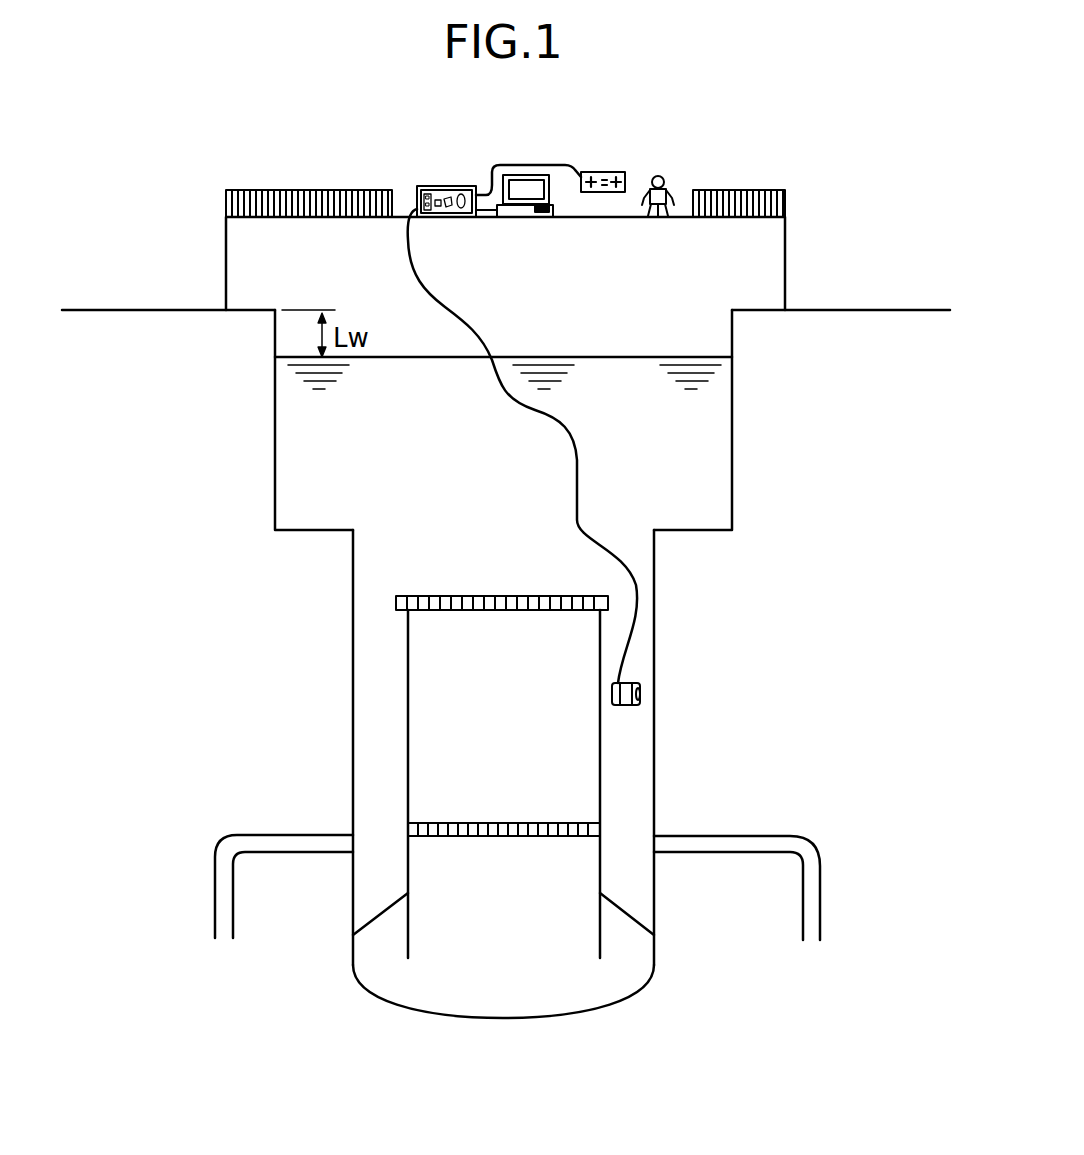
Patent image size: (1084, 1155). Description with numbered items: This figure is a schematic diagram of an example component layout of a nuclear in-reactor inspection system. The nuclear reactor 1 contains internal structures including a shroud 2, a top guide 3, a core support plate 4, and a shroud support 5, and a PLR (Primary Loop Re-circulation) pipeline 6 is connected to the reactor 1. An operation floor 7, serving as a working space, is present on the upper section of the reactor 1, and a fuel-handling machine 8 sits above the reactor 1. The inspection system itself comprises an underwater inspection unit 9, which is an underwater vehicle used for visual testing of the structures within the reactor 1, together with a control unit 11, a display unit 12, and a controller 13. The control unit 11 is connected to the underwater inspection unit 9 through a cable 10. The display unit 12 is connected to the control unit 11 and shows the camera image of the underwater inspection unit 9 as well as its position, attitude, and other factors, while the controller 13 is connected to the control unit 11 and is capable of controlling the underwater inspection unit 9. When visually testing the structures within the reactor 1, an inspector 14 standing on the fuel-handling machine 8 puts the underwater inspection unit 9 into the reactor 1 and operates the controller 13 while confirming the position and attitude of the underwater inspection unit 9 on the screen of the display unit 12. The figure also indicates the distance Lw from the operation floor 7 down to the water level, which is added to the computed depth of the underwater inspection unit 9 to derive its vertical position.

The nuclear reactor 1 is at (656, 580).
The shroud 2 is at (408, 673).
The top guide 3 is at (507, 596).
The core support plate 4 is at (507, 823).
The shroud support 5 is at (629, 912).
The PLR pipeline 6 is at (289, 835).
The operation floor 7 is at (133, 310).
The fuel-handling machine 8 is at (313, 190).
The underwater inspection unit 9 is at (641, 693).
The cable 10 is at (580, 465).
The control unit 11 is at (449, 186).
The display unit 12 is at (530, 217).
The controller 13 is at (604, 172).
The inspector 14 is at (659, 176).